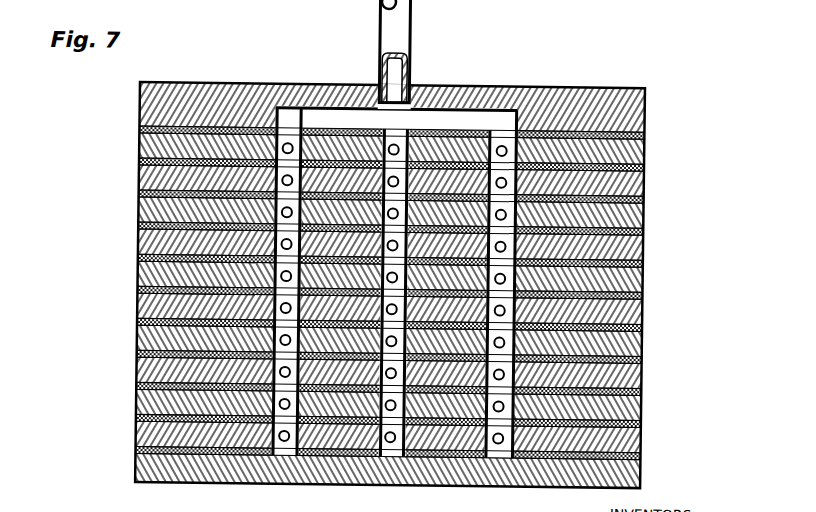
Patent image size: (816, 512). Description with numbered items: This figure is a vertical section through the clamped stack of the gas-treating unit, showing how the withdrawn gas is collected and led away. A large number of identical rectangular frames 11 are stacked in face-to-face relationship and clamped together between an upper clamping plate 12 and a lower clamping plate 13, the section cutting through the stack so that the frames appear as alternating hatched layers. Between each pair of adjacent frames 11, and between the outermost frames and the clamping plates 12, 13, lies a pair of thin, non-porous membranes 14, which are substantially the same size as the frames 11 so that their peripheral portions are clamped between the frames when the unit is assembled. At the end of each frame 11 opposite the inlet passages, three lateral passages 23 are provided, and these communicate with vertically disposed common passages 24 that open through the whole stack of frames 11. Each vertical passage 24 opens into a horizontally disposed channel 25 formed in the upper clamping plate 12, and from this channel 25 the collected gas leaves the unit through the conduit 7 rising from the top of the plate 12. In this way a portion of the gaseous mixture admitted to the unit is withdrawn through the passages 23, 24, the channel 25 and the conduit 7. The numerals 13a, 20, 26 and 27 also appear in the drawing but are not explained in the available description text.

The conduit 7 is at (412, 30).
The rectangular frame 11 is at (646, 244).
The upper clamping plate 12 is at (645, 111).
The lower clamping plate 13 is at (646, 466).
The plate extension 13a is at (535, 0).
The thin non-porous membrane 14 is at (646, 162).
The support 20 is at (254, 10).
The lateral passage 23 is at (286, 141).
The vertically disposed common passage 24 is at (289, 440).
The horizontally disposed channel 25 is at (347, 115).
The hook 26 is at (427, 5).
The insert 27 is at (358, 51).